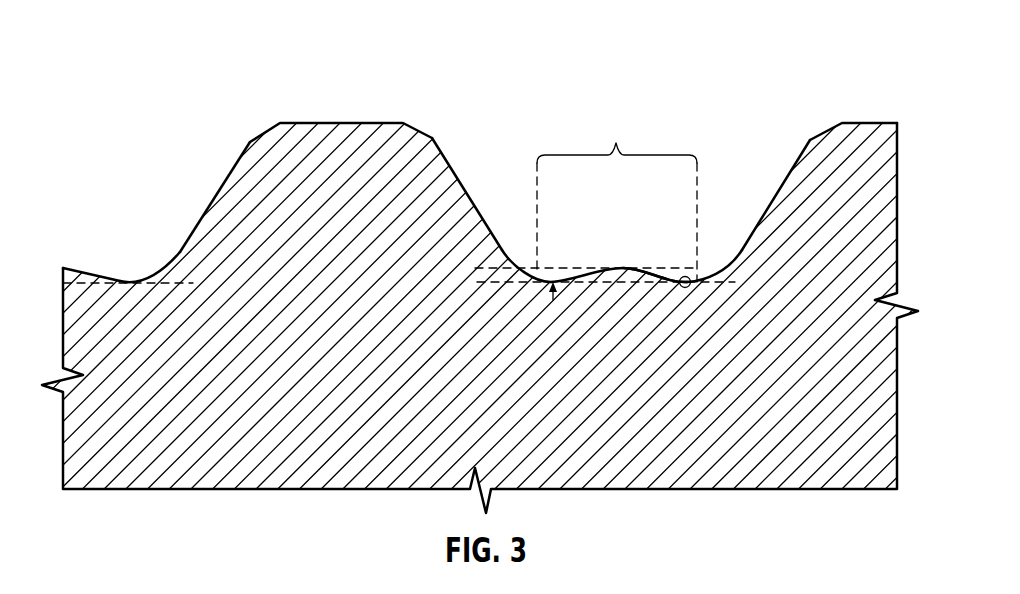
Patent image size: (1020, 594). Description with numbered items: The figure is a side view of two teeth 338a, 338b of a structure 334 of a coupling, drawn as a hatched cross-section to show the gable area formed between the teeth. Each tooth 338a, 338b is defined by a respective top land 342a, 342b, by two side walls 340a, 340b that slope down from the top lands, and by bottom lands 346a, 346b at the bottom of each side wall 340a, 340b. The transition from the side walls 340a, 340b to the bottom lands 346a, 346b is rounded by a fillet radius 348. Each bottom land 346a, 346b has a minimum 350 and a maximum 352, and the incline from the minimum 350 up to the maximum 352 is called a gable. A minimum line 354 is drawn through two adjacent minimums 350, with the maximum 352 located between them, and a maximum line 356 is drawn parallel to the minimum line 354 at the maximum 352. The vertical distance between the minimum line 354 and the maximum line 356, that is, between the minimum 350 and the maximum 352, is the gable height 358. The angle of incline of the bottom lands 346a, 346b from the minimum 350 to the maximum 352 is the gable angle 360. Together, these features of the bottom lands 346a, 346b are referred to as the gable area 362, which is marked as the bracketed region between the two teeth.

The structure 334 is at (150, 52).
The tooth 338a is at (385, 197).
The tooth 338b is at (883, 210).
The side wall 340a is at (225, 183).
The side wall 340b is at (797, 158).
The top land 342a is at (355, 122).
The top land 342b is at (863, 122).
The bottom land 346a is at (112, 277).
The bottom land 346b is at (652, 276).
The fillet radius 348 is at (721, 258).
The minimum 350 is at (137, 285).
The maximum 352 is at (623, 266).
The minimum line 354 is at (180, 282).
The maximum line 356 is at (497, 268).
The gable height 358 is at (557, 302).
The gable angle 360 is at (86, 322).
The gable area 362 is at (617, 196).